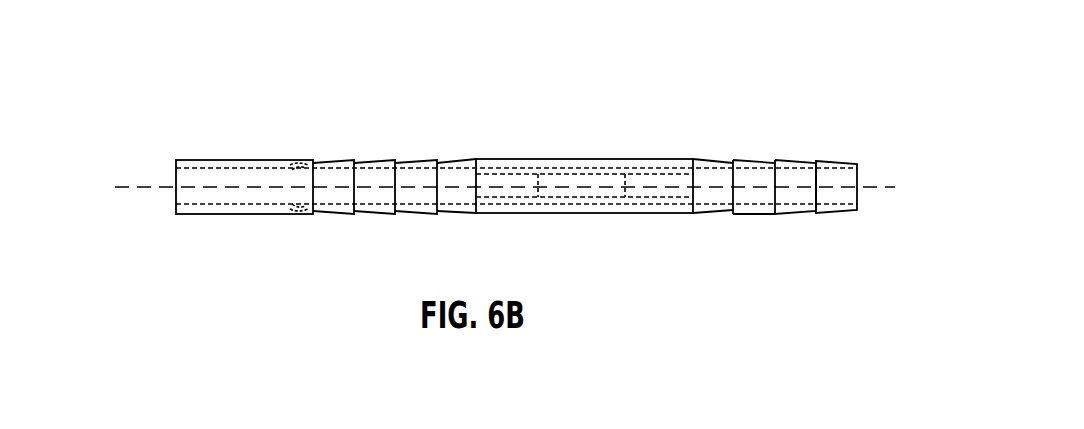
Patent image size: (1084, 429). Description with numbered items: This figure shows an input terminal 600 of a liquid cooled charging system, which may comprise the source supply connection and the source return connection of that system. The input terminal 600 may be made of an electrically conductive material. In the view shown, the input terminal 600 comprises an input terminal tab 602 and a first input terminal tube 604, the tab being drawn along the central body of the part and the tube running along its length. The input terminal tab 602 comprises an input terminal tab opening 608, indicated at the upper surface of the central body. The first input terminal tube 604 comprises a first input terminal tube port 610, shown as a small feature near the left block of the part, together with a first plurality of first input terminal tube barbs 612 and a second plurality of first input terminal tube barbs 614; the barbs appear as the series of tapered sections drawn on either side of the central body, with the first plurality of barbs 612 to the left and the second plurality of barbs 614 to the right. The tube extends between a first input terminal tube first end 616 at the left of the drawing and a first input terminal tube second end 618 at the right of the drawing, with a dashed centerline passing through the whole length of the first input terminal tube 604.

The input terminal 600 is at (501, 153).
The input terminal tab 602 is at (597, 178).
The first input terminal tube 604 is at (597, 195).
The input terminal tab opening 608 is at (592, 152).
The first input terminal tube port 610 is at (296, 151).
The first plurality of first input terminal tube barbs 612 is at (403, 152).
The second plurality of first input terminal tube barbs 614 is at (760, 152).
The first input terminal tube first end 616 is at (160, 172).
The first input terminal tube second end 618 is at (866, 171).